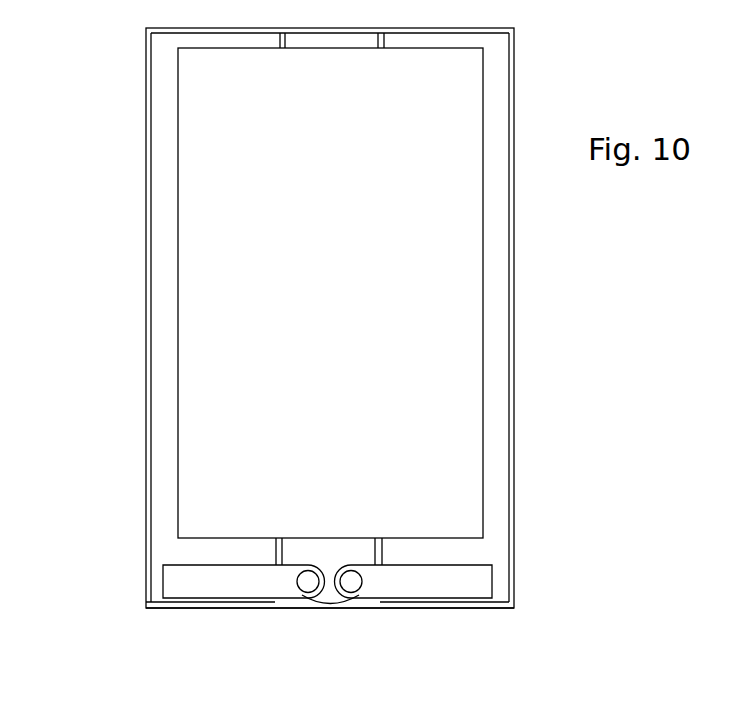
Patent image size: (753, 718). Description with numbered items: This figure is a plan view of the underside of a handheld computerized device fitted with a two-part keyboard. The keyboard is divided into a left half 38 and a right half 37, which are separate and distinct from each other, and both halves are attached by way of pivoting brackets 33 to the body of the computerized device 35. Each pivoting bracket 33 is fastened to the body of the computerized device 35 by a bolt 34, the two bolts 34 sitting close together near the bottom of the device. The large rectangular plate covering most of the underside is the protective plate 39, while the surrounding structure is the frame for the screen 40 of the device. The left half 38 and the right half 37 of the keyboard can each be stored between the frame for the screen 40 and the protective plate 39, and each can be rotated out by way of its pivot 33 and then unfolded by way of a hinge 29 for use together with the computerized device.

The hinge 29 is at (146, 148).
The pivoting bracket 33 is at (213, 583).
The bolt 34 is at (306, 584).
The body of the computerized device 35 is at (329, 596).
The right half of the keyboard 37 is at (162, 294).
The left half of the keyboard 38 is at (496, 280).
The protective plate 39 is at (417, 465).
The frame for the screen 40 is at (145, 608).